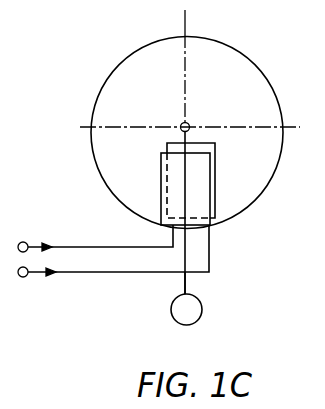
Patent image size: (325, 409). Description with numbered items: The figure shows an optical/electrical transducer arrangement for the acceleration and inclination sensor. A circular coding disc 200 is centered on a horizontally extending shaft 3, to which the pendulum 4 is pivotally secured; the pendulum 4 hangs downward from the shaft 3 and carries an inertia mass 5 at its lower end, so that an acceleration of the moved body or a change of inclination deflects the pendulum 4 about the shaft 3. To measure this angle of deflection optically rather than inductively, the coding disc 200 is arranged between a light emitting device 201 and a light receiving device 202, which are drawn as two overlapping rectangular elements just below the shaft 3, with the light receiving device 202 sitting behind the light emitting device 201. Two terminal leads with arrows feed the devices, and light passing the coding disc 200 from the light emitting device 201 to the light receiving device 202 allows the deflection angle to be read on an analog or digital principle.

The coding disc 200 is at (252, 80).
The shaft 3 is at (188, 122).
The light receiving device 202 is at (207, 142).
The light emitting device 201 is at (198, 184).
The pendulum 4 is at (187, 280).
The inertia mass 5 is at (202, 309).